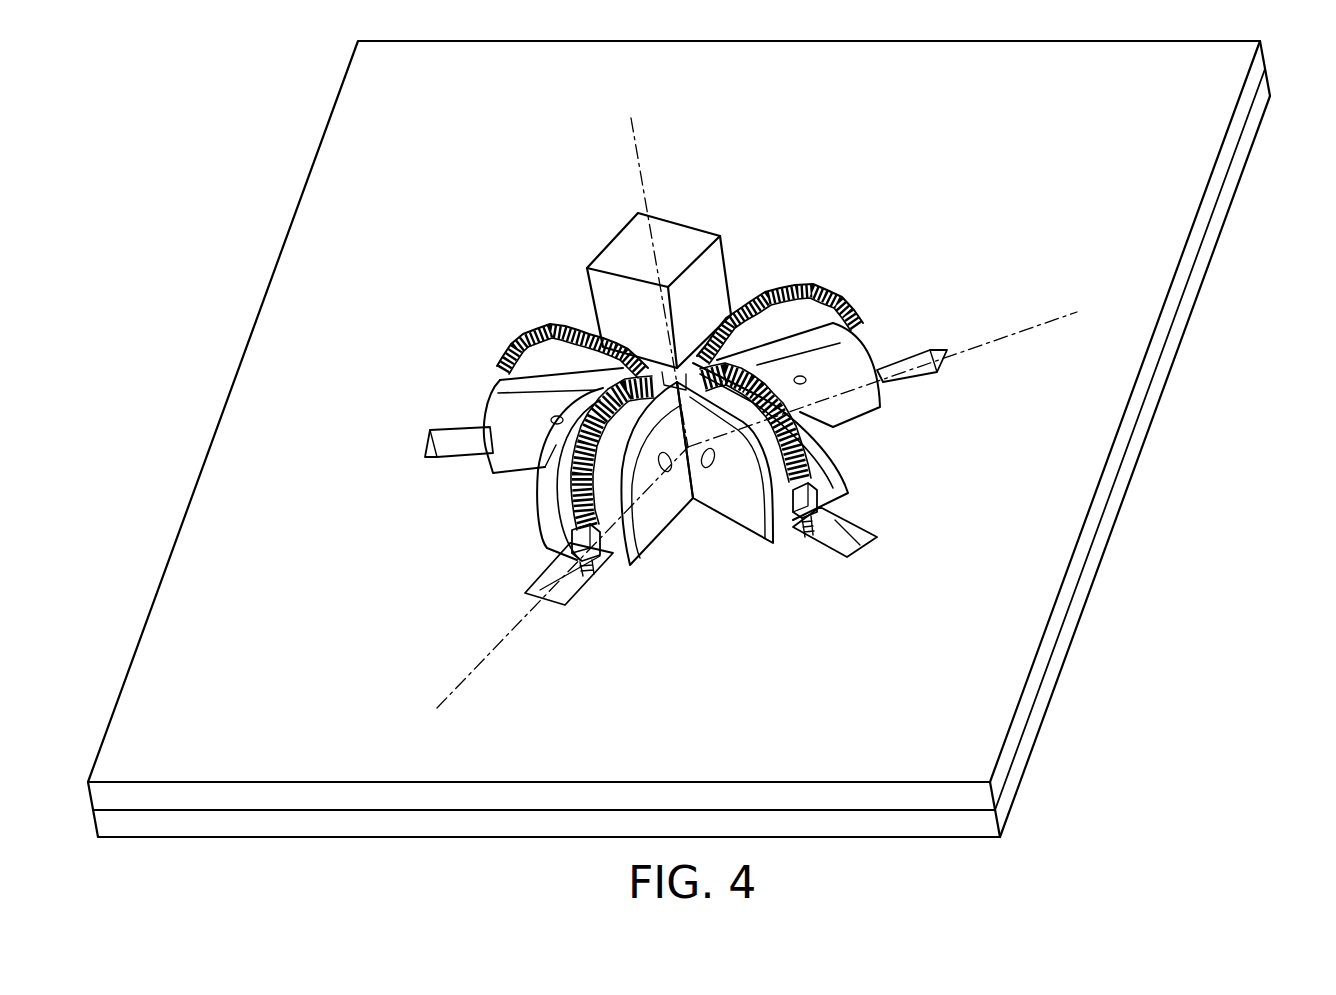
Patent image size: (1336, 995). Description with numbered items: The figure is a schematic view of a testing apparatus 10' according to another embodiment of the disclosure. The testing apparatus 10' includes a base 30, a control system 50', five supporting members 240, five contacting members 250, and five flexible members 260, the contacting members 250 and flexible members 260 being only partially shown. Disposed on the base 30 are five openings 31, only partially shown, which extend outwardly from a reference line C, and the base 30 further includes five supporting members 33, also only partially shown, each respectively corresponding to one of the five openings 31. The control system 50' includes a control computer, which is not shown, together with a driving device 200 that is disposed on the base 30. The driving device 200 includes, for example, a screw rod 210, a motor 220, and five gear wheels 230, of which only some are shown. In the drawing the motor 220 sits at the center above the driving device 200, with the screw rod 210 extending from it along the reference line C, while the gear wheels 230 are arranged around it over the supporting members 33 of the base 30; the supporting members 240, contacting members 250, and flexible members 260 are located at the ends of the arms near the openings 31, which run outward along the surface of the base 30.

The testing apparatus 10' is at (705, 439).
The base 30 is at (1165, 215).
The openings 31 is at (913, 377).
The supporting members 33 is at (865, 407).
The control system 50' is at (706, 378).
The driving device 200 is at (873, 226).
The screw rod 210 is at (683, 378).
The motor 220 is at (697, 238).
The gear wheel 230 is at (810, 320).
The supporting members 240 is at (832, 500).
The contacting members 250 is at (812, 537).
The flexible members 260 is at (805, 532).